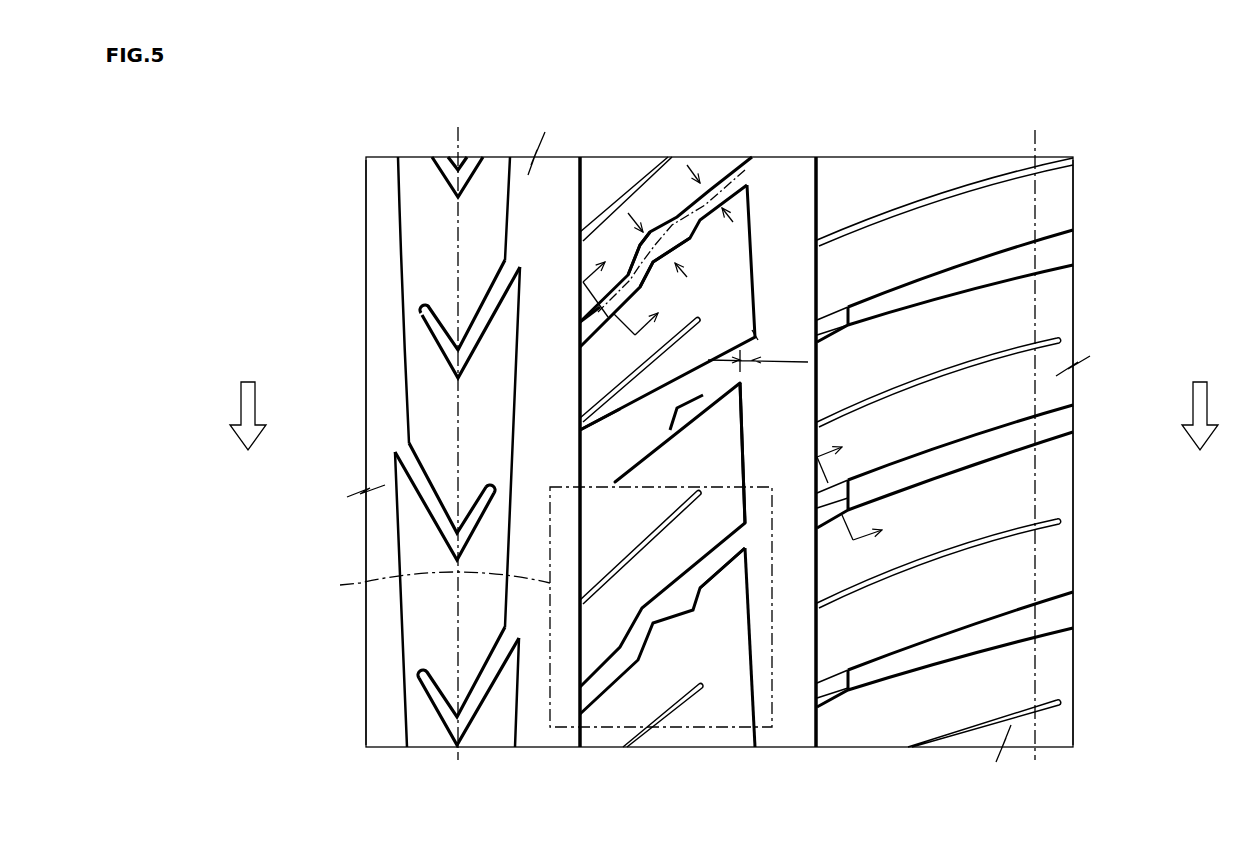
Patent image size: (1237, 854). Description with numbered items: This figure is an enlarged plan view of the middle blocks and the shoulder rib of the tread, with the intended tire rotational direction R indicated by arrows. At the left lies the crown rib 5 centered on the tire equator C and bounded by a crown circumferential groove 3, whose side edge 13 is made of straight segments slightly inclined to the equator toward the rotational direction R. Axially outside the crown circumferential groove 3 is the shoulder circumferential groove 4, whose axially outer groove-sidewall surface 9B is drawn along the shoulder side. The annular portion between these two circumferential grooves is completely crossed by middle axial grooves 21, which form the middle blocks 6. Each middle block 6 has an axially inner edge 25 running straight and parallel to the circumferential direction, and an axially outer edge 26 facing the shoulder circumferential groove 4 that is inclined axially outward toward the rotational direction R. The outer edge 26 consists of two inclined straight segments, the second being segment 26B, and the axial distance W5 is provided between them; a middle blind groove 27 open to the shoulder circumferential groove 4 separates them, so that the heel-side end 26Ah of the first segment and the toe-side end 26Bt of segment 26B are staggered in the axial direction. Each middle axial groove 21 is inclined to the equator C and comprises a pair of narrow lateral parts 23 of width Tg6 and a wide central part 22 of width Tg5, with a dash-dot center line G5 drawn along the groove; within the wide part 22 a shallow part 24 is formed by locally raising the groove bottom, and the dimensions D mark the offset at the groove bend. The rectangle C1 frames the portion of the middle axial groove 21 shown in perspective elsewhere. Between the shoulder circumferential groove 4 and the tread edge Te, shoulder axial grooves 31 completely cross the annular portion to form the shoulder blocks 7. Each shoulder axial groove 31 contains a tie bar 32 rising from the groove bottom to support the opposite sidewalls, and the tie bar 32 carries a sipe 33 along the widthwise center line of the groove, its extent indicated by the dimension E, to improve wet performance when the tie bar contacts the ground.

The crown circumferential groove 3 is at (380, 182).
The shoulder circumferential groove 4 is at (783, 177).
The crown rib 5 is at (425, 447).
The middle block 6 is at (574, 449).
The shoulder block 7 is at (981, 447).
The axially outer groove-sidewall surface 9B is at (800, 540).
The side edge 13 is at (398, 198).
The middle axial groove 21 is at (590, 240).
The central part 22 is at (658, 228).
The lateral part 23 is at (733, 163).
The shallow part 24 is at (688, 243).
The axially inner edge 25 is at (575, 640).
The axially outer edge 26 is at (748, 497).
The inclined straight segment 26B is at (743, 600).
The toe-side end 26Bt is at (754, 333).
The heel-side end 26Ah is at (740, 385).
The middle blind groove 27 is at (612, 392).
The shoulder axial groove 31 is at (938, 283).
The tie bar 32 is at (822, 312).
The sipe 33 is at (840, 315).
The tire equator C is at (458, 432).
The rectangle C1 is at (429, 584).
The tread edge Te is at (1036, 434).
The intended tire rotational direction R is at (724, 400).
The groove bend width D is at (621, 298).
The tie bar width E is at (858, 484).
The groove centerline G5 is at (727, 193).
The groove width of the wide central part Tg5 is at (660, 261).
The groove width of the narrow lateral parts Tg6 is at (712, 208).
The axial distance W5 is at (758, 357).